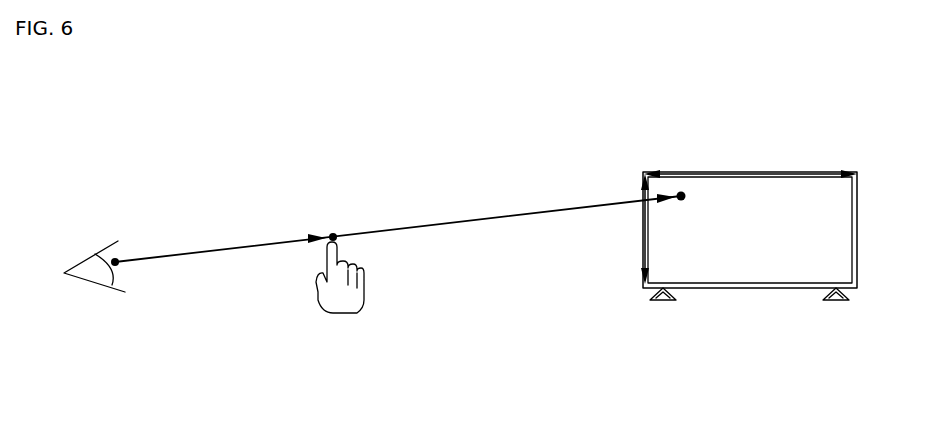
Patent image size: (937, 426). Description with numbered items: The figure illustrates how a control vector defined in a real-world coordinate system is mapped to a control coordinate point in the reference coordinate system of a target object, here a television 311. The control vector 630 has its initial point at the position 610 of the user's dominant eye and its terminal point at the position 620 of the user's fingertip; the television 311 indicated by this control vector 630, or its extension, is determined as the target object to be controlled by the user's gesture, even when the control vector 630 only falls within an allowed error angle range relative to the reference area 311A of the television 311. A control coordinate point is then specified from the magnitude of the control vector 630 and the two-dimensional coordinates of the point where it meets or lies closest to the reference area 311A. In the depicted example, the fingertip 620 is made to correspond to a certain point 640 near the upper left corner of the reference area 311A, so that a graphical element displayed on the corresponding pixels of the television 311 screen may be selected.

The position of an eye of the user 610 is at (120, 267).
The position of a fingertip of the user 620 is at (333, 232).
The control vector 630 is at (230, 247).
The point near an upper left corner of the reference area 640 is at (680, 192).
The television 311 is at (745, 288).
The reference area 311A is at (785, 171).